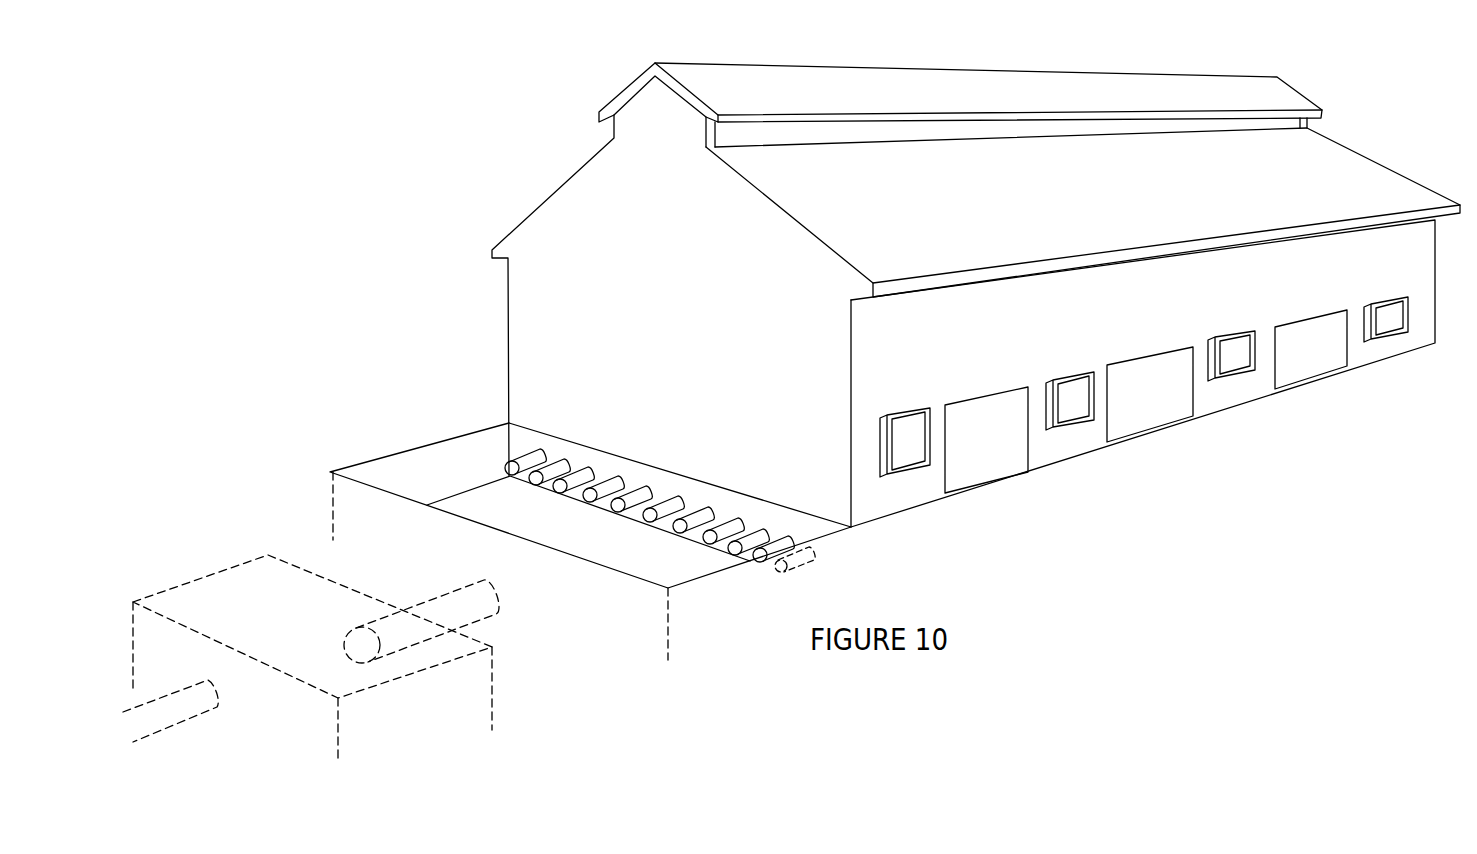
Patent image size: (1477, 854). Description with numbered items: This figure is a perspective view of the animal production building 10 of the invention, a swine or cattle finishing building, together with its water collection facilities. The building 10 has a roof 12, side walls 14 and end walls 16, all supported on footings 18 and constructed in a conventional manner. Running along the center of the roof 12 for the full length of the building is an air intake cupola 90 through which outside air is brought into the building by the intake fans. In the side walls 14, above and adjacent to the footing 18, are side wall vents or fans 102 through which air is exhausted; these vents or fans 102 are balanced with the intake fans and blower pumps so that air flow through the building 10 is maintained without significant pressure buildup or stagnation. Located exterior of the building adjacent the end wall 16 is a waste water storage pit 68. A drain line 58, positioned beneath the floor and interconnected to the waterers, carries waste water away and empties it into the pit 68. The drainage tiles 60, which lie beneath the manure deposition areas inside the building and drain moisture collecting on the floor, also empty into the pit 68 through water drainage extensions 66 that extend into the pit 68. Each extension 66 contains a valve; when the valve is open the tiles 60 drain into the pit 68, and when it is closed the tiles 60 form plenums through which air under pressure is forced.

The animal production building 10 is at (1348, 138).
The roof 12 is at (913, 228).
The side walls 14 is at (1153, 318).
The end walls 16 is at (648, 324).
The footings 18 is at (533, 482).
The drain line 58 is at (527, 455).
The drainage tiles 60 is at (805, 549).
The water drainage extensions 66 is at (661, 510).
The waste water storage pit 68 is at (430, 462).
The air intake cupola 90 is at (710, 78).
The side wall vents or fans 102 is at (1067, 428).